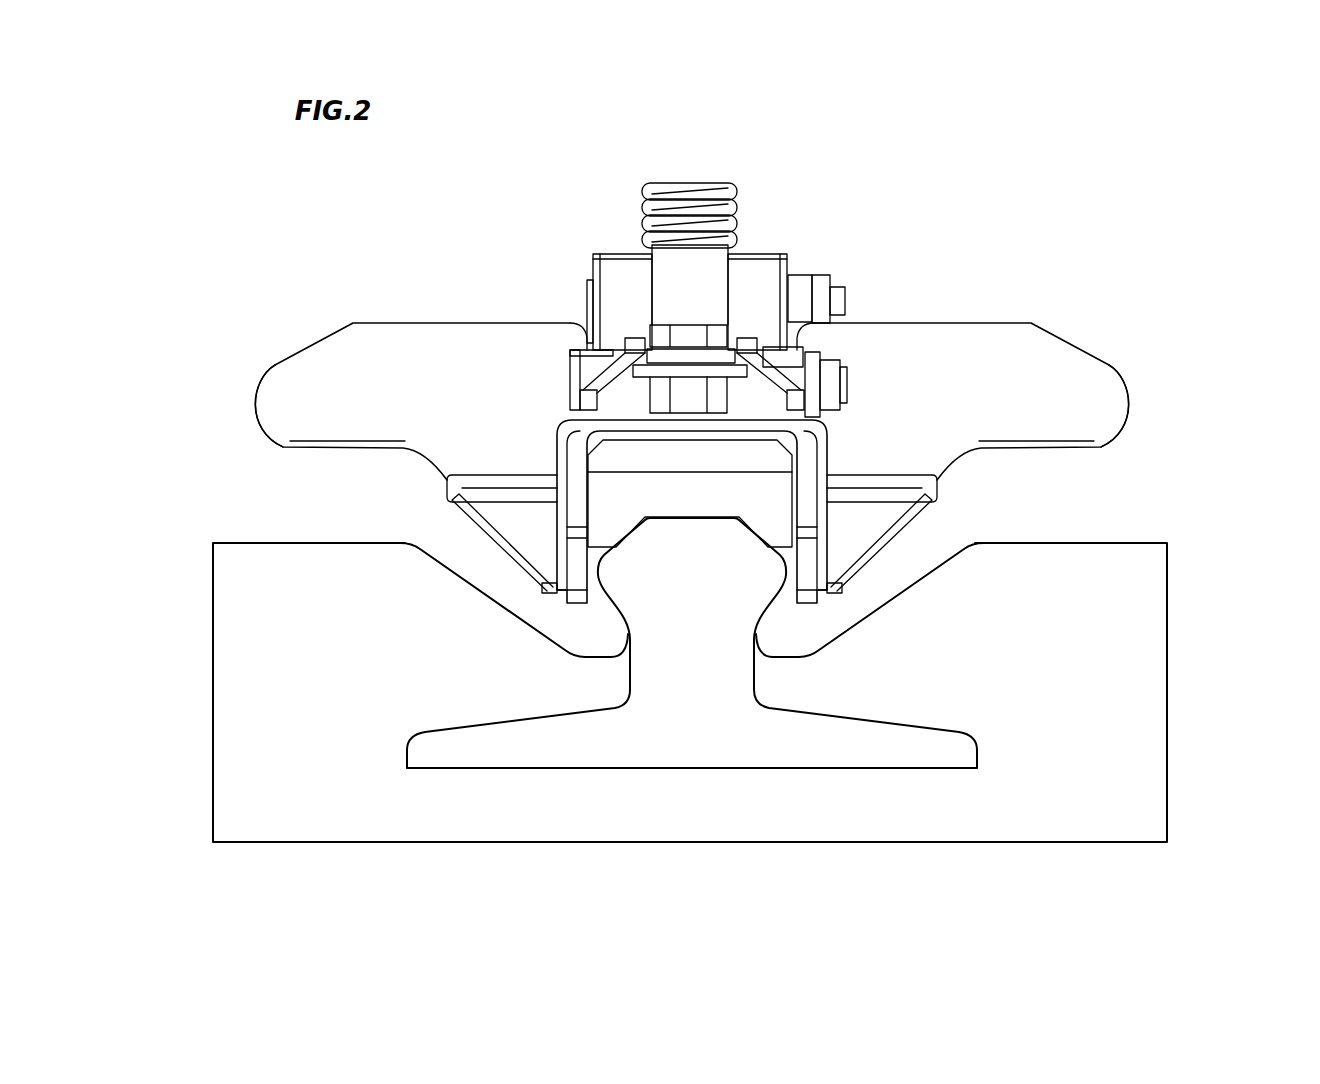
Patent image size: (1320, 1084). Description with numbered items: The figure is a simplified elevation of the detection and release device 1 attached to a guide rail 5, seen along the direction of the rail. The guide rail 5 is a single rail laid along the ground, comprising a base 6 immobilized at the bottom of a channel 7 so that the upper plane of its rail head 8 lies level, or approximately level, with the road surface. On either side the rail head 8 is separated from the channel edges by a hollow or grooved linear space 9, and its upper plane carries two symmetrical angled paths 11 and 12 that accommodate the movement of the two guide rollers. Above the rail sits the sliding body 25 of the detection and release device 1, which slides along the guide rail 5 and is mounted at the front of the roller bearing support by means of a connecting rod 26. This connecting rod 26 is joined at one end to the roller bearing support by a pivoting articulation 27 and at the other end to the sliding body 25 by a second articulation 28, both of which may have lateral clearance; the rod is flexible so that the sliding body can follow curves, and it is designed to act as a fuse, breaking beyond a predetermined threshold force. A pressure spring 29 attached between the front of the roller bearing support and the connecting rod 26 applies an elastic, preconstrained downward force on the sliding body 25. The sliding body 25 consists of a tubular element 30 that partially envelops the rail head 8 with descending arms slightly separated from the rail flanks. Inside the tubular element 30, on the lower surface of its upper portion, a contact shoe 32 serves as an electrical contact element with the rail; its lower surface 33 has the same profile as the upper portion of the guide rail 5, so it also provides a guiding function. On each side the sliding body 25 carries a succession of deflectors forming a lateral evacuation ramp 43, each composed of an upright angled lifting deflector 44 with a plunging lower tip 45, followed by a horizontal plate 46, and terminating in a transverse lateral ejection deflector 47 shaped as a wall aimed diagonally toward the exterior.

The detection and release device 1 is at (990, 130).
The guide rail 5 is at (773, 623).
The base 6 is at (463, 752).
The channel 7 is at (1085, 832).
The rail head 8 is at (600, 612).
The space 9 is at (510, 584).
The angled path 11 is at (603, 557).
The angled path 12 is at (790, 555).
The sliding body 25 is at (1199, 381).
The connecting rod 26 is at (777, 238).
The pivoting articulation 27 is at (858, 296).
The second articulation 28 is at (858, 380).
The pressure spring 29 is at (633, 205).
The tubular element 30 is at (876, 612).
The contact shoe 32 is at (637, 502).
The lower surface 33 is at (687, 523).
The lateral evacuation ramp 43 is at (271, 358).
The lifting deflector 44 is at (515, 560).
The plunging lower tip 45 is at (552, 598).
The horizontal plate 46 is at (460, 487).
The lateral ejection deflector 47 is at (345, 355).